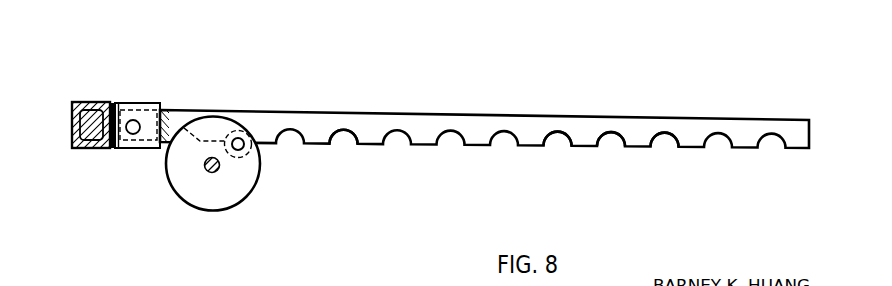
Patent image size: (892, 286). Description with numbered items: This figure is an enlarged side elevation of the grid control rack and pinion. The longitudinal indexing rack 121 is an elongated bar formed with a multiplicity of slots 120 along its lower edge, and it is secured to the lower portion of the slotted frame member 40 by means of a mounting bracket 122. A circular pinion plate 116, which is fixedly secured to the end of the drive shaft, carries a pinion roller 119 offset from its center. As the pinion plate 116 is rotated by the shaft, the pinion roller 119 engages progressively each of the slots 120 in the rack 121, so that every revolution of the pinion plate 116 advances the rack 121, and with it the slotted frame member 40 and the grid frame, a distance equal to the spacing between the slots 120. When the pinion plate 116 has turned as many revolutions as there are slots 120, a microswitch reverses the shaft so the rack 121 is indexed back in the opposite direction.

The slotted frame member 40 is at (85, 150).
The pinion plate 116 is at (228, 193).
The pinion roller 119 is at (250, 135).
The slots 120 is at (346, 144).
The longitudinal indexing rack 121 is at (533, 128).
The mounting bracket 122 is at (137, 105).